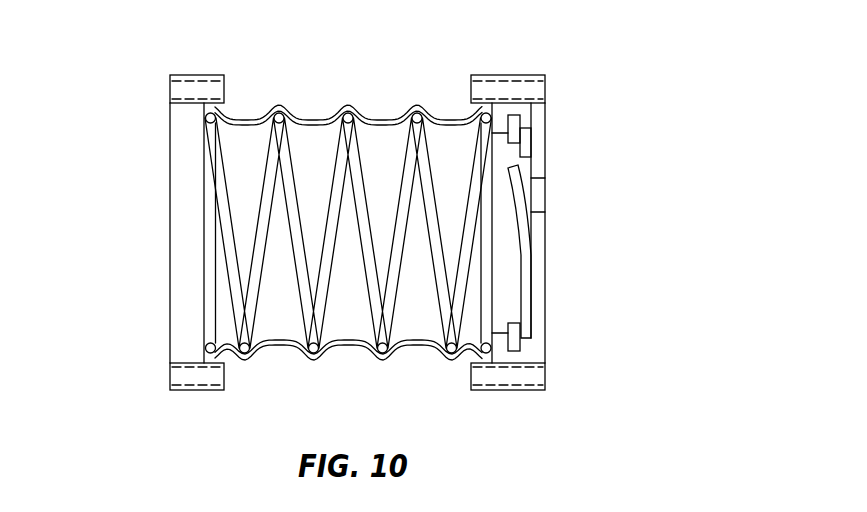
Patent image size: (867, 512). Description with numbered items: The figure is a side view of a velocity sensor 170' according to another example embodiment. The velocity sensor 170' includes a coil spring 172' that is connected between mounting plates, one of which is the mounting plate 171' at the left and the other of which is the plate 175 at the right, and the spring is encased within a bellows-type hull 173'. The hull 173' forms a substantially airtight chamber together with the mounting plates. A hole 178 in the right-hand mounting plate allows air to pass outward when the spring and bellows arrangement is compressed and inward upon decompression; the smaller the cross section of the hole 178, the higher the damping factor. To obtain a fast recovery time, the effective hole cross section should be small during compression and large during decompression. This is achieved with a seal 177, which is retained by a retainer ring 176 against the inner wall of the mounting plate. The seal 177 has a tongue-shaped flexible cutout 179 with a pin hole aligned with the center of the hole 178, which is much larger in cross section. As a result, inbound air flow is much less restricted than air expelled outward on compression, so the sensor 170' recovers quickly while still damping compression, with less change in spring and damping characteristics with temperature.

The velocity sensor 170' is at (399, 211).
The mounting plate 171' is at (154, 232).
The coil spring 172' is at (348, 200).
The bellows-type hull 173' is at (348, 216).
The second end plate 175 is at (519, 80).
The retainer ring 176 is at (515, 122).
The seal 177 is at (525, 143).
The hole 178 is at (538, 187).
The tongue-shaped flexible cutout 179 is at (527, 240).